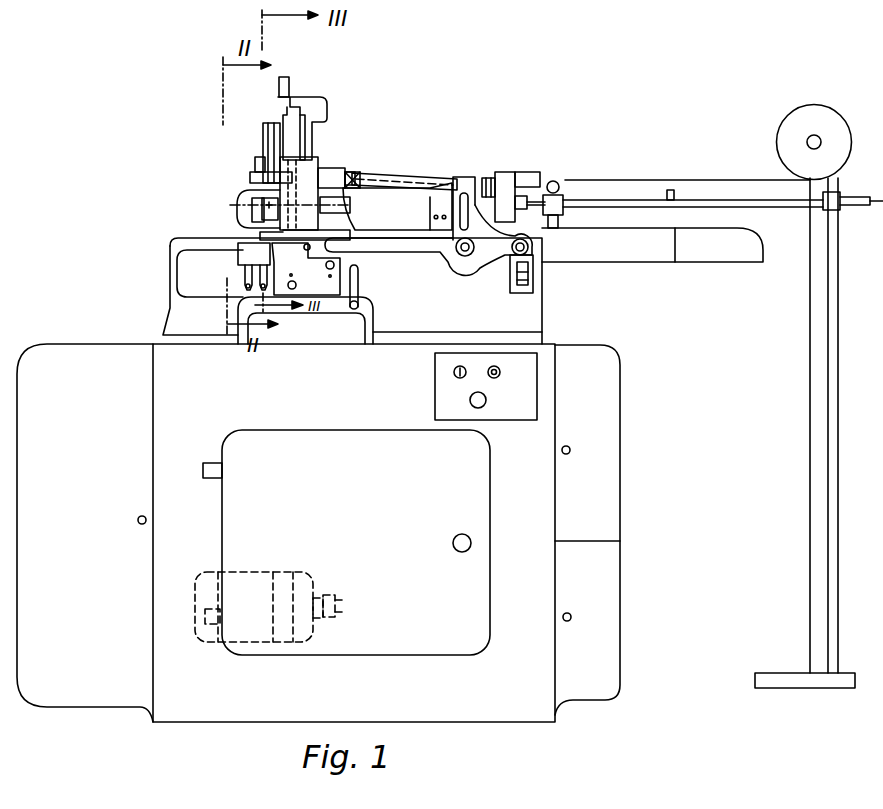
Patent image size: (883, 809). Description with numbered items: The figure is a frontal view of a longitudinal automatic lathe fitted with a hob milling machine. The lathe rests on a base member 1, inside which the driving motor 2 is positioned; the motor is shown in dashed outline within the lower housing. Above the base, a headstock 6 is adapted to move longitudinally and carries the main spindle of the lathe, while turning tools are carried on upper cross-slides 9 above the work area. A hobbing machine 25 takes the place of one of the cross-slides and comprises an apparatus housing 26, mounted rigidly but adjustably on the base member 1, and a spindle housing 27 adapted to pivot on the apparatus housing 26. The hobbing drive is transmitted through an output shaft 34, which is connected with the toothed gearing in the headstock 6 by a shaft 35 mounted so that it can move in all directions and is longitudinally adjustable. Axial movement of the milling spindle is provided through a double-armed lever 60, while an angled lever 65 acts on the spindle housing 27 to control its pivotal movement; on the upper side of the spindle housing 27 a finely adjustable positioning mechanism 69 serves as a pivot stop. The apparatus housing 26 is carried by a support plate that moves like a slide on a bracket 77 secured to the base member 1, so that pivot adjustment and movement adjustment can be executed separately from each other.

The base member 1 is at (200, 722).
The driving motor 2 is at (292, 572).
The headstock 6 is at (374, 195).
The upper cross-slides 9 is at (281, 125).
The hobbing machine 25 is at (232, 196).
The apparatus housing 26 is at (315, 165).
The spindle housing 27 is at (250, 215).
The output shaft 34 is at (355, 180).
The shaft 35 is at (405, 178).
The lever 60 is at (242, 270).
The angled lever 65 is at (306, 269).
The finely adjustable positioning mechanism 69 is at (255, 163).
The bracket 77 is at (335, 285).